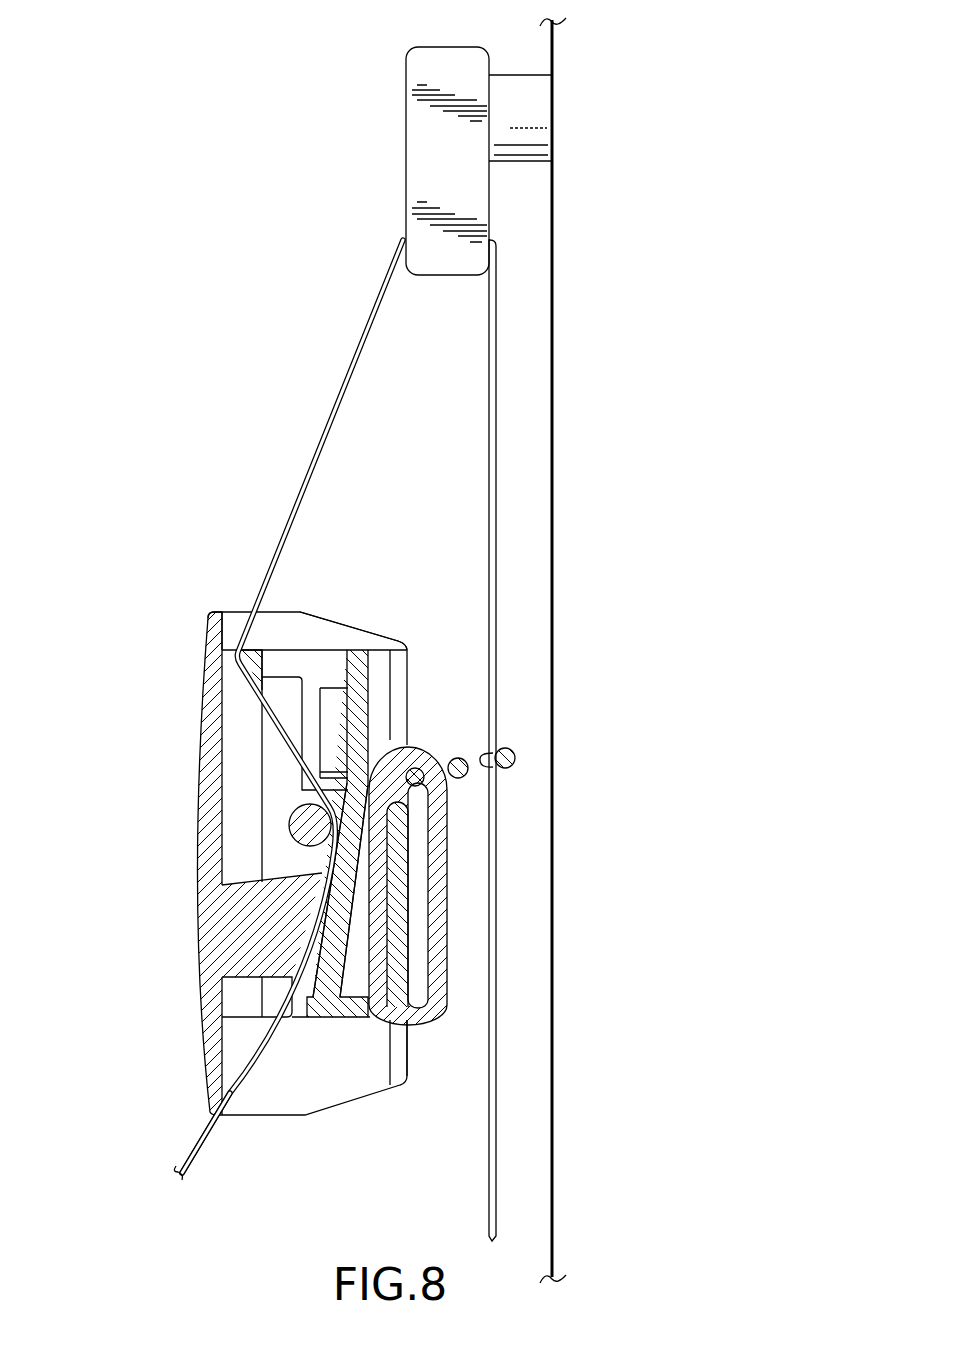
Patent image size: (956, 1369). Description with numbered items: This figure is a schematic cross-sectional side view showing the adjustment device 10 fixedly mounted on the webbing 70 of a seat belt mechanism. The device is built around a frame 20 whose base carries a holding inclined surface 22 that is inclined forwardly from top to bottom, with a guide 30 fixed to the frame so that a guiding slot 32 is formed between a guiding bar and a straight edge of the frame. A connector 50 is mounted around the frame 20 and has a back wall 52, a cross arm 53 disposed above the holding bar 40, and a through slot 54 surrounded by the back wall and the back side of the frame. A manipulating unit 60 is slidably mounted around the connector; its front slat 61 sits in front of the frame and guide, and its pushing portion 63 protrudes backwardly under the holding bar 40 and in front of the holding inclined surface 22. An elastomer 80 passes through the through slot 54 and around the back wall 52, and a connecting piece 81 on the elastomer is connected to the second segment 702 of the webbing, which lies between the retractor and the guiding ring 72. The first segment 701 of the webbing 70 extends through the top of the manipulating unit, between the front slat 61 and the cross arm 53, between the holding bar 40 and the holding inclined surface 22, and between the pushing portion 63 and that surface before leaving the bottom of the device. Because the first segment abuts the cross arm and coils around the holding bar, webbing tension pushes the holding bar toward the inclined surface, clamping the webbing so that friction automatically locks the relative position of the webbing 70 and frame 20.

The adjustment device 10 is at (190, 606).
The frame 20 is at (370, 639).
The holding inclined surface 22 is at (318, 938).
The guide 30 is at (287, 693).
The guiding slot 32 is at (322, 748).
The holding bar 40 is at (297, 806).
The connector 50 is at (394, 683).
The back wall 52 is at (417, 878).
The cross arm 53 is at (248, 650).
The through slot 54 is at (377, 1020).
The manipulating unit 60 is at (190, 762).
The front slat 61 is at (216, 664).
The pushing portion 63 is at (272, 862).
The webbing 70 is at (331, 396).
The first segment 701 is at (203, 1148).
The second segment 702 is at (495, 505).
The guiding ring 72 is at (427, 152).
The elastomer 80 is at (427, 1013).
The connecting piece 81 is at (506, 770).